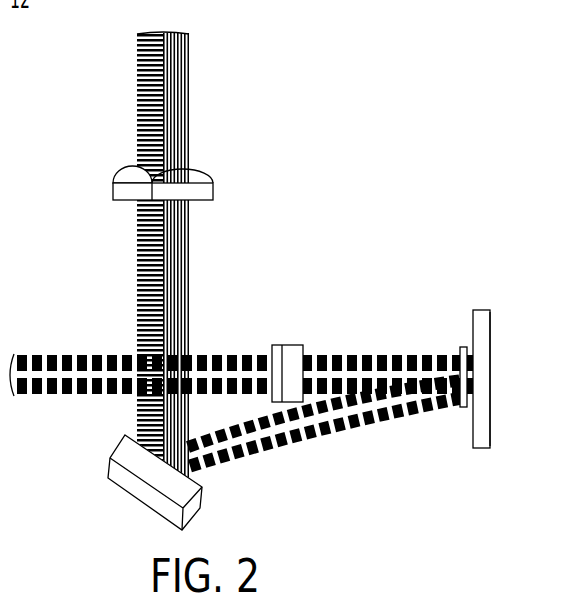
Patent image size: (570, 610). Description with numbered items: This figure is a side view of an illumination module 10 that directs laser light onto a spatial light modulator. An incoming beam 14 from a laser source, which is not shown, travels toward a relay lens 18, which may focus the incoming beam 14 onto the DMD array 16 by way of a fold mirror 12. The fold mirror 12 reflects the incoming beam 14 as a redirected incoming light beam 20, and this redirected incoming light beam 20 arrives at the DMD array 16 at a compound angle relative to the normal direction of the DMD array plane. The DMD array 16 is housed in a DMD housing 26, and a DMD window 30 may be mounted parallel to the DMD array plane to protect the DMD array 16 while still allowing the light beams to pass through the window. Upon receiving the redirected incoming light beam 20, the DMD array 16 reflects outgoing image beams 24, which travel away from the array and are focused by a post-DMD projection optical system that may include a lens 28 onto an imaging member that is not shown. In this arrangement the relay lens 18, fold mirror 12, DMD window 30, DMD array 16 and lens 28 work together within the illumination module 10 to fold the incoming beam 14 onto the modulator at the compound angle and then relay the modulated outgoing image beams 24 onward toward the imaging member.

The illumination module 10 is at (409, 143).
The fold mirror 12 is at (108, 468).
The incoming beam 14 is at (178, 67).
The DMD array 16 is at (473, 424).
The relay lens 18 is at (125, 187).
The redirected incoming light beam 20 is at (260, 461).
The outgoing image beams 24 is at (346, 360).
The DMD housing 26 is at (490, 345).
The lens 28 is at (278, 345).
The DMD window 30 is at (459, 350).